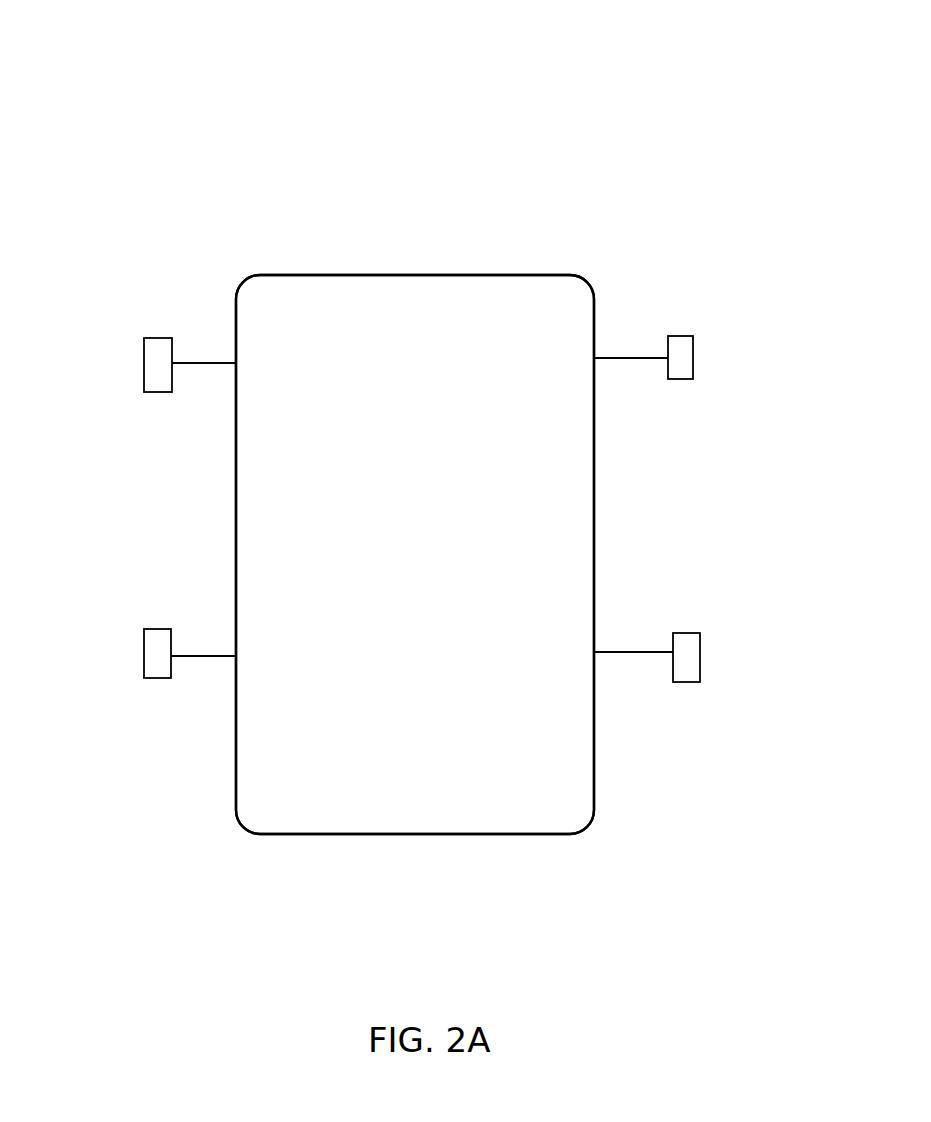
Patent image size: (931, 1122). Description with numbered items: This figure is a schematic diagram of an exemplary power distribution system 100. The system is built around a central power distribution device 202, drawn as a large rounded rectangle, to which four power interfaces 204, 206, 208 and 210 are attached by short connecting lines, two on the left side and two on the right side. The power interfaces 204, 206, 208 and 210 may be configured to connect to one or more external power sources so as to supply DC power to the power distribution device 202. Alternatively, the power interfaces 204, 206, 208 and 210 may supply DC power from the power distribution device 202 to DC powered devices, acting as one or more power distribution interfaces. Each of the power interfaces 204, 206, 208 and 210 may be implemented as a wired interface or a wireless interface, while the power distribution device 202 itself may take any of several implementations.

The power distribution system 100 is at (563, 177).
The power distribution device 202 is at (352, 267).
The power interface 204 is at (144, 370).
The power interface 206 is at (144, 656).
The power interface 208 is at (698, 357).
The power interface 210 is at (703, 664).